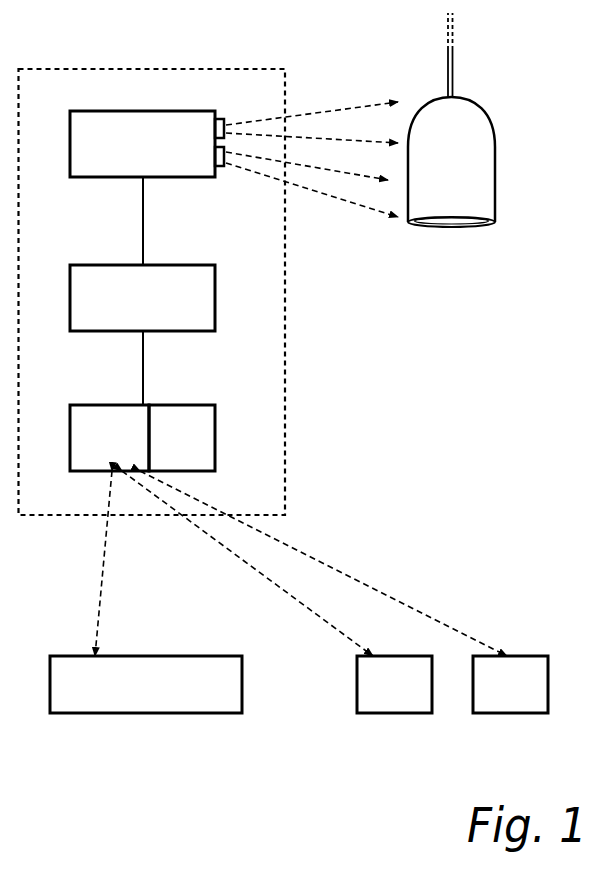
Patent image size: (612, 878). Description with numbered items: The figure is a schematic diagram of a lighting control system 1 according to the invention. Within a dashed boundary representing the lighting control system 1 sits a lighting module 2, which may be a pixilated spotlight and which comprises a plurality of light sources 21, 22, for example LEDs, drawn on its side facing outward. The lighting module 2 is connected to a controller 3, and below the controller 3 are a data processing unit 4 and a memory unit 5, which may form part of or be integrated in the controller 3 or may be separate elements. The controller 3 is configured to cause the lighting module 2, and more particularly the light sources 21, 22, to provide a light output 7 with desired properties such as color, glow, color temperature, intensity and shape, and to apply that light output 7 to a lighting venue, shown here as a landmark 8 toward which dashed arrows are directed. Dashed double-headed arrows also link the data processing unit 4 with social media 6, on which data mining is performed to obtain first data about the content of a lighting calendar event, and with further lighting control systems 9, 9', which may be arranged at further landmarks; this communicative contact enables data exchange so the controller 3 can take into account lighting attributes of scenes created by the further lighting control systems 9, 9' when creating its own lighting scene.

The lighting control system 1 is at (285, 380).
The lighting module 2 is at (142, 144).
The controller 3 is at (142, 298).
The data processing unit 4 is at (109, 438).
The memory unit 5 is at (182, 438).
The social media 6 is at (146, 592).
The light output 7 is at (338, 199).
The landmark 8 is at (483, 147).
The further lighting control system 9 is at (277, 592).
The further lighting control system 9' is at (344, 592).
The light source 21 is at (221, 116).
The light source 22 is at (221, 167).